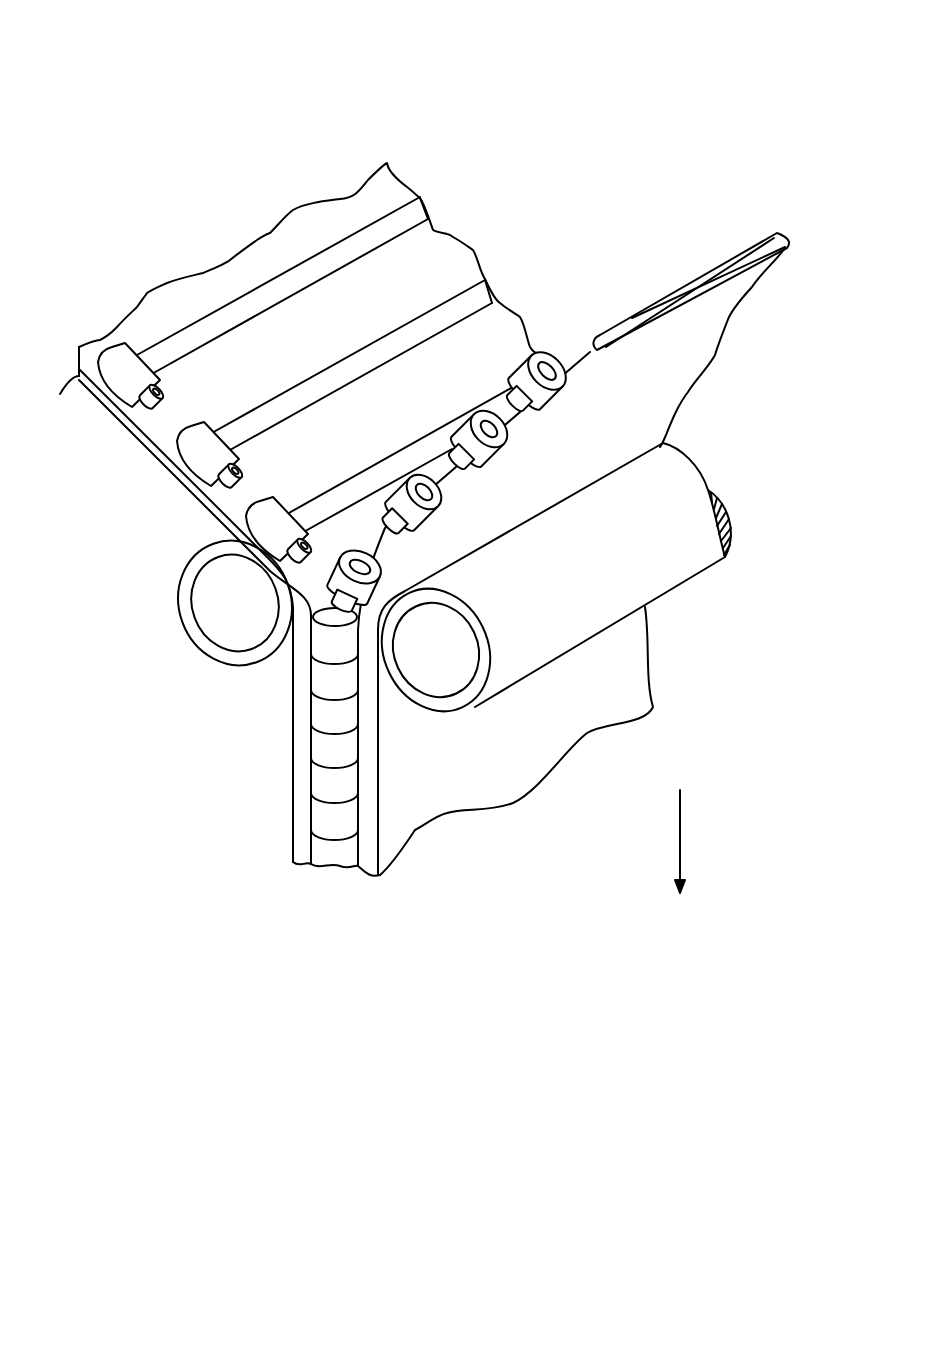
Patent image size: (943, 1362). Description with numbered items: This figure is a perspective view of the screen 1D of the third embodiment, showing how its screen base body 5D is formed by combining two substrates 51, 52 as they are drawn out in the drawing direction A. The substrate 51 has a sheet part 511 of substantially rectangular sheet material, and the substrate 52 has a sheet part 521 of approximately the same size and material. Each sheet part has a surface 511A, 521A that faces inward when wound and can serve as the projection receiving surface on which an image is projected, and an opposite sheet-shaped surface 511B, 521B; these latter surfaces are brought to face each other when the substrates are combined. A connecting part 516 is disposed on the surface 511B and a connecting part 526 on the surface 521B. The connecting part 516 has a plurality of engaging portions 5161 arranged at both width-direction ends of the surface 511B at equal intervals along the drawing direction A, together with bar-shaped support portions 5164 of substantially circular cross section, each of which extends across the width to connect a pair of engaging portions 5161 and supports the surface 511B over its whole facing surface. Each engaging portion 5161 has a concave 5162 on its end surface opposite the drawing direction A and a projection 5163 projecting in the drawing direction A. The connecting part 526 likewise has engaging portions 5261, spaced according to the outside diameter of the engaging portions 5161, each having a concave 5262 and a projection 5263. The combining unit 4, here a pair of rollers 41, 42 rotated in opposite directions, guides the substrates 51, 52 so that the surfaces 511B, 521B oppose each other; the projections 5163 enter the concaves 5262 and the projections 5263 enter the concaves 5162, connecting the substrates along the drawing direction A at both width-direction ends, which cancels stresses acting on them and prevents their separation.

The screen 1D is at (700, 108).
The substrate 51 is at (340, 125).
The substrate 52 is at (753, 150).
The sheet part 511 is at (125, 408).
The surface 511A is at (87, 380).
The surface 511B is at (302, 222).
The connecting part 516 is at (480, 160).
The engaging portion 5161 is at (113, 357).
The concave 5162 is at (290, 612).
The projection 5163 is at (147, 408).
The support portion 5164 is at (253, 305).
The sheet part 521 is at (733, 250).
The surface 521A is at (710, 330).
The surface 521B is at (663, 293).
The connecting part 526 is at (600, 282).
The engaging portion 5261 is at (560, 413).
The concave 5262 is at (572, 385).
The projection 5263 is at (516, 392).
The combining unit 4 is at (425, 586).
The roller 41 is at (180, 604).
The roller 42 is at (665, 582).
The screen base body 5D is at (632, 692).
The drawing direction A is at (683, 845).